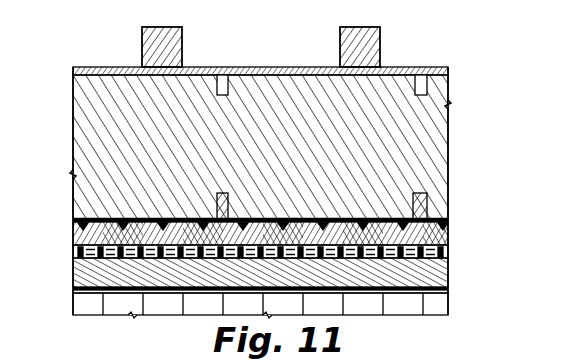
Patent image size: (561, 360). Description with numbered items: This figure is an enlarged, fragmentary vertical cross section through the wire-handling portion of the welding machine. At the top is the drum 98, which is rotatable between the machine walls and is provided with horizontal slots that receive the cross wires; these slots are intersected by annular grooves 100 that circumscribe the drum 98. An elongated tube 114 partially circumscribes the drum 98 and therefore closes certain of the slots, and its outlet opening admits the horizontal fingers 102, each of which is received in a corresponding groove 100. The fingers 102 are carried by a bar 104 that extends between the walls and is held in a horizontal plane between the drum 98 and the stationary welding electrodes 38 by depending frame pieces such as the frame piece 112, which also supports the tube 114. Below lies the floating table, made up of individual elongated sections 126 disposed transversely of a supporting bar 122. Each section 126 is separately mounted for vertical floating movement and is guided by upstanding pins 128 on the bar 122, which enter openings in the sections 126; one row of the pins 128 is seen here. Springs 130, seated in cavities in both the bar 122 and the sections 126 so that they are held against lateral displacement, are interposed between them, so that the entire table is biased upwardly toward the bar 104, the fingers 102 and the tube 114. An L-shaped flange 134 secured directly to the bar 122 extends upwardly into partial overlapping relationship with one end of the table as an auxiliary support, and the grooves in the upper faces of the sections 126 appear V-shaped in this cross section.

The stationary welding electrodes 38 is at (122, 307).
The drum 98 is at (95, 164).
The annular grooves 100 is at (223, 76).
The fingers 102 is at (223, 194).
The bar 104 is at (90, 218).
The frame piece 112 is at (155, 45).
The tube 114 is at (309, 68).
The bar 122 is at (450, 222).
The sections 126 is at (450, 234).
The upstanding pins 128 is at (95, 260).
The springs 130 is at (88, 250).
The L-shaped flange 134 is at (450, 297).